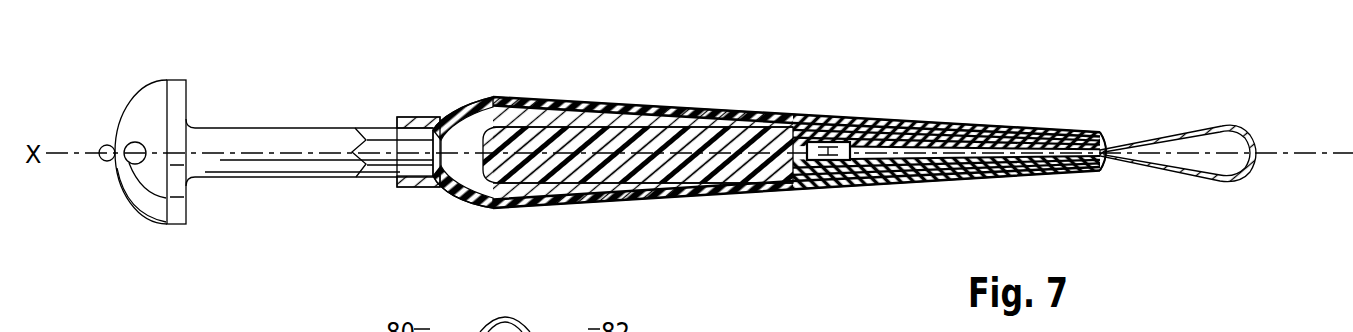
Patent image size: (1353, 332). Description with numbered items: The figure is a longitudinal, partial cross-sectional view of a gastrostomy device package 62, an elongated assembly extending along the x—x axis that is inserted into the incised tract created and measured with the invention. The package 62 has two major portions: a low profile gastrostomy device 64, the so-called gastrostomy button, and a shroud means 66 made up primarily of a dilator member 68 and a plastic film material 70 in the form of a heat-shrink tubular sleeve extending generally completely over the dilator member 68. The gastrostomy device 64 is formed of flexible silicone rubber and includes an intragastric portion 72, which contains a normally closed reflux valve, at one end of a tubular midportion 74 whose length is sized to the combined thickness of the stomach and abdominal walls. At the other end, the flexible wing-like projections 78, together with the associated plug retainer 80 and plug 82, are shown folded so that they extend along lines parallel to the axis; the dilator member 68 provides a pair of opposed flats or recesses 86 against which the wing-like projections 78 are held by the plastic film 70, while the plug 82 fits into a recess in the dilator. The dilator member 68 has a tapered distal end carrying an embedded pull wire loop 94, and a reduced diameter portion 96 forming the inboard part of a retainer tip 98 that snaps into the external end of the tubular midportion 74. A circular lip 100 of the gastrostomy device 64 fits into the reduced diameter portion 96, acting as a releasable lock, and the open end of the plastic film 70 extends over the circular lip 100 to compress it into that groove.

The gastrostomy device package 62 is at (579, 78).
The low profile gastrostomy device 64 is at (279, 100).
The shroud means 66 is at (776, 100).
The dilator member 68 is at (710, 190).
The plastic film material 70 is at (910, 124).
The intragastric portion 72 is at (136, 224).
The tubular midportion 74 is at (245, 167).
The wing-like projections 78 is at (525, 117).
The plug retainer 80 is at (726, 110).
The plug 82 is at (795, 190).
The opposed flats or recesses 86 is at (619, 112).
The pull wire loop 94 is at (1135, 170).
The reduced diameter portion 96 is at (441, 190).
The retainer tip 98 is at (372, 132).
The circular lip 100 is at (478, 133).